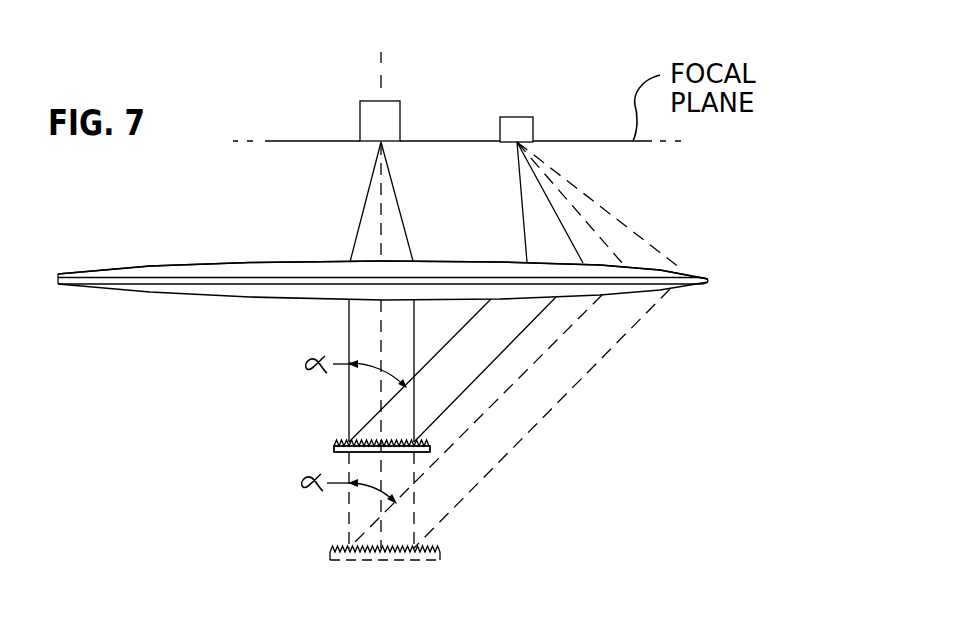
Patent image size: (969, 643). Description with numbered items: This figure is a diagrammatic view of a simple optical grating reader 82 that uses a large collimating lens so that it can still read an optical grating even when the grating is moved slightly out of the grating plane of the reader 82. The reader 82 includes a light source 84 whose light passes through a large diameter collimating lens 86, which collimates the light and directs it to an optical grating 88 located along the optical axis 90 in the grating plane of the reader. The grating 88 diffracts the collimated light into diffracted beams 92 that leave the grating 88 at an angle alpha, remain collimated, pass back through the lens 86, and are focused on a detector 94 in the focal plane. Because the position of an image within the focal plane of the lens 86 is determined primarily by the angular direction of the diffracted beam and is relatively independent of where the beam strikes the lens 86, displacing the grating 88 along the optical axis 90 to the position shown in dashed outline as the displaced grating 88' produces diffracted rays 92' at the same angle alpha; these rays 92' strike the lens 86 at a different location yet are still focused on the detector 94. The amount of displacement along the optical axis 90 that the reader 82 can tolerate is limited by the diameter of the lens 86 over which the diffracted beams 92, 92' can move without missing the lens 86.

The optical grating reader 82 is at (229, 240).
The light source 84 is at (360, 118).
The collimating lens 86 is at (221, 297).
The optical grating 88 is at (338, 435).
The displaced optical grating 88' is at (343, 535).
The optical axis 90 is at (381, 63).
The diffracted beams 92 is at (466, 292).
The diffracted rays 92' is at (531, 345).
The detector 94 is at (518, 116).